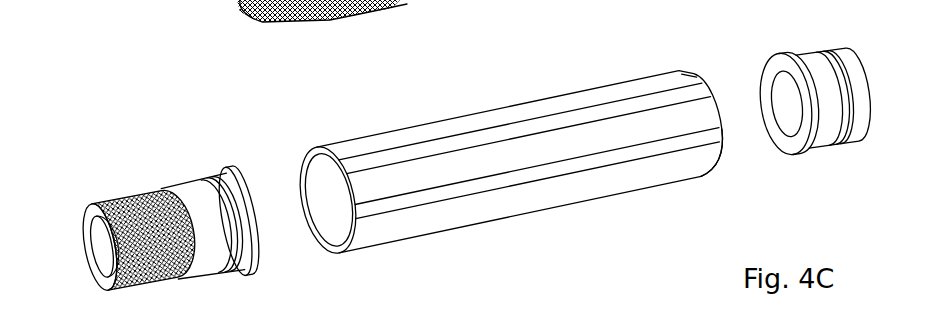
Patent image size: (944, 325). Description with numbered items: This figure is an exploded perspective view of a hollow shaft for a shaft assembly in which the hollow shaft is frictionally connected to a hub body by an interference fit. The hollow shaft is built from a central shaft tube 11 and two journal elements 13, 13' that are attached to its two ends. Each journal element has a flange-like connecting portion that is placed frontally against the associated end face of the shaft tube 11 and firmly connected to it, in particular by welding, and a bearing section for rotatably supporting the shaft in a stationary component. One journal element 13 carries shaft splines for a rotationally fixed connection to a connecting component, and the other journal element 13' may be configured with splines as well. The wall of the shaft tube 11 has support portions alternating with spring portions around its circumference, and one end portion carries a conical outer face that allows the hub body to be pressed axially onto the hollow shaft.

The journal element 13 is at (172, 192).
The shaft tube 11 is at (520, 146).
The journal element 13' is at (815, 113).